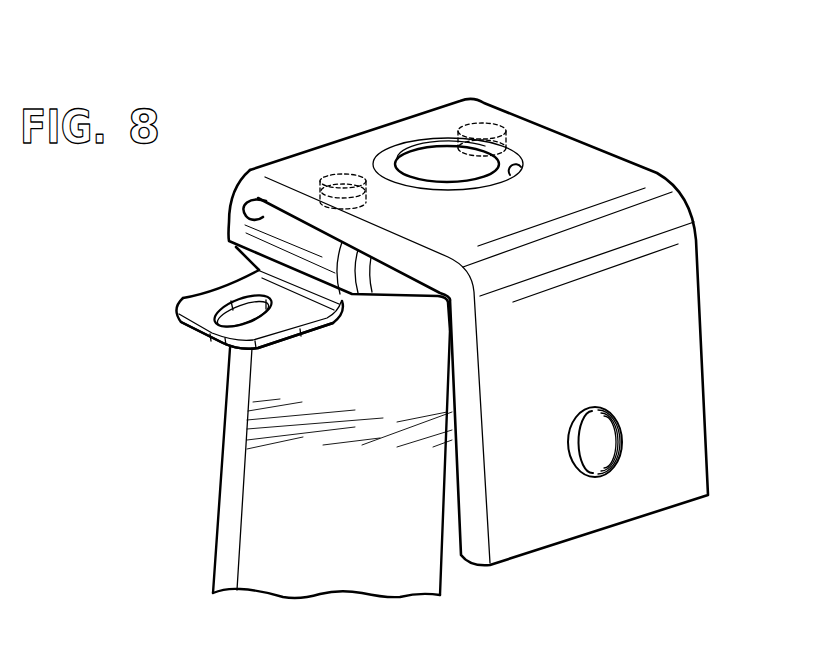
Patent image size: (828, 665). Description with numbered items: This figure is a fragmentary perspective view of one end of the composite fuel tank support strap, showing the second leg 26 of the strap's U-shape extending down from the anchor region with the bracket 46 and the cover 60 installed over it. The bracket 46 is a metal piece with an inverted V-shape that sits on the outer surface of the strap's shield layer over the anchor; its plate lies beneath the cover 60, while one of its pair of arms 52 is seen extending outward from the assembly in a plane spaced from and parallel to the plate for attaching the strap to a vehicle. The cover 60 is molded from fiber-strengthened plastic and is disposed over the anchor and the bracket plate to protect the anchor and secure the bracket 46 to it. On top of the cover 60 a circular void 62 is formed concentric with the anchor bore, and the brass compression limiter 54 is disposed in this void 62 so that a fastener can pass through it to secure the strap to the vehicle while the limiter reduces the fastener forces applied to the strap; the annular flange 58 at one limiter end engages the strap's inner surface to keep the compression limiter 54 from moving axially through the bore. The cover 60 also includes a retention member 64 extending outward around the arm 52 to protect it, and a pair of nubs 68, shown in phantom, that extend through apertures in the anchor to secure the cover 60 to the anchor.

The second leg 26 is at (238, 515).
The bracket 46 is at (179, 284).
The arms 52 is at (205, 333).
The compression limiter 54 is at (430, 153).
The annular flange 58 is at (447, 140).
The cover 60 is at (716, 437).
The void 62 is at (519, 171).
The retention members 64 is at (252, 168).
The nubs 68 is at (345, 181).